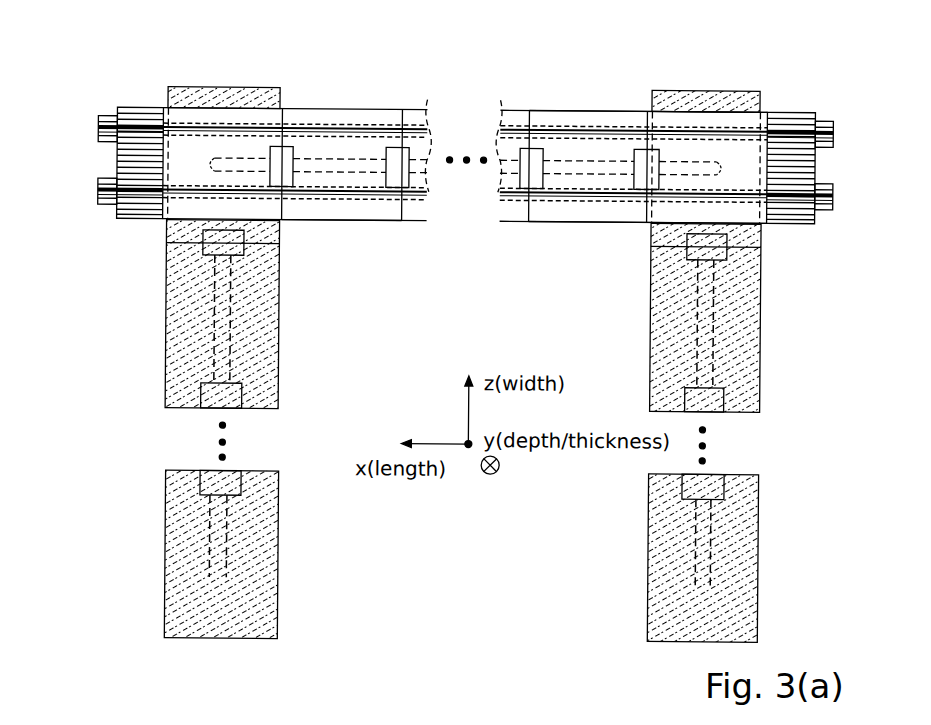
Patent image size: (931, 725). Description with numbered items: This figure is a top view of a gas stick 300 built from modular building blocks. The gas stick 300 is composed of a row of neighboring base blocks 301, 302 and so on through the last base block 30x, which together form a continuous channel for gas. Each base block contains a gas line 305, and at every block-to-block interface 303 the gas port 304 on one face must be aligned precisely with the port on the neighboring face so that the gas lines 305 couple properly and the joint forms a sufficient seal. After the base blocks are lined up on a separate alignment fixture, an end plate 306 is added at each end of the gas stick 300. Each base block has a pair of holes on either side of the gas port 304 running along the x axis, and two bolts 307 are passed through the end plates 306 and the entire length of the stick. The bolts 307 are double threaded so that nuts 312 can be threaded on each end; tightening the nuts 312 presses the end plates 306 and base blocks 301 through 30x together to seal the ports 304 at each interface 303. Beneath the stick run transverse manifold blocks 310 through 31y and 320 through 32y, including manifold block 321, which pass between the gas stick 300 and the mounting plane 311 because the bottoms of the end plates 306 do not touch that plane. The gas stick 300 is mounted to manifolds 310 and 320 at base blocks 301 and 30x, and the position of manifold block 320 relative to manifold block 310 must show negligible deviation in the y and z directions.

The gas stick 300 is at (170, 75).
The base block 301 is at (177, 205).
The base block 302 is at (392, 213).
The interface 303 is at (280, 104).
The gas port 304 is at (248, 150).
The gas line 305 is at (300, 166).
The end plate 306 is at (140, 112).
The bolt 307 is at (340, 126).
The manifold block 310 is at (223, 95).
The mounting plane 311 is at (268, 362).
The nut 312 is at (97, 128).
The manifold block 320 is at (675, 102).
The manifold block 321 is at (658, 367).
The base block 30x is at (740, 212).
The manifold block 31y is at (265, 508).
The manifold block 32y is at (656, 520).